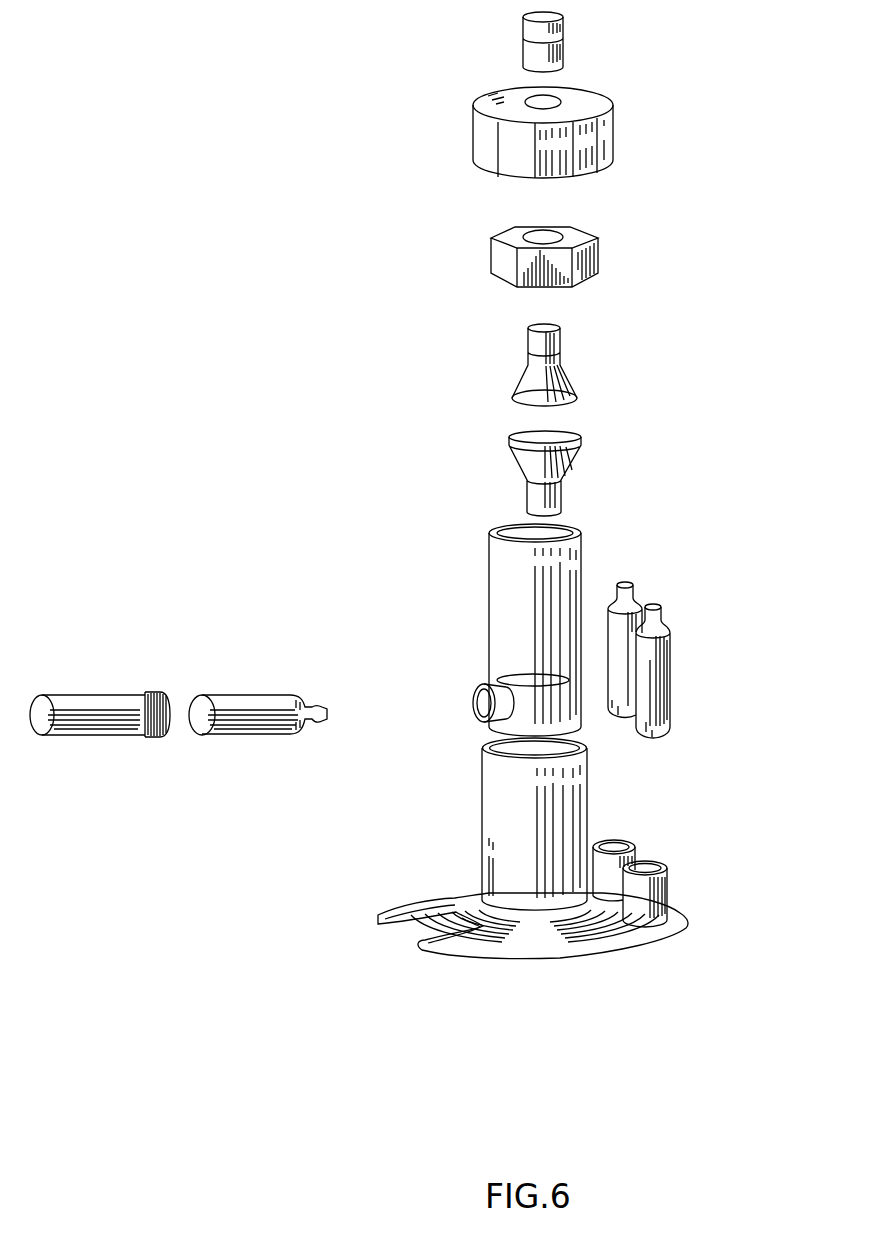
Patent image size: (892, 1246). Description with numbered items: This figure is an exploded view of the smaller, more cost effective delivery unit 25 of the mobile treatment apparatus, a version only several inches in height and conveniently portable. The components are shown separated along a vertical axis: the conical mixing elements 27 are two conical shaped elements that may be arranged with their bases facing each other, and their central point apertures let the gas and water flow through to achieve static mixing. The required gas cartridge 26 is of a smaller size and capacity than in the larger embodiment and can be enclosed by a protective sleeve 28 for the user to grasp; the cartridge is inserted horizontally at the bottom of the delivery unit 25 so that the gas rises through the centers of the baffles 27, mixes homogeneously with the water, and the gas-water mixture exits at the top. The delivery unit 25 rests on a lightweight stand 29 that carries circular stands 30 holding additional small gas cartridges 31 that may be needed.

The delivery unit 25 is at (808, 312).
The gas cartridge 26 is at (247, 705).
The conical mixing elements 27 is at (527, 461).
The protective sleeve 28 is at (90, 712).
The lightweight stand 29 is at (678, 913).
The circular stands 30 is at (617, 842).
The additional small gas cartridges 31 is at (670, 645).